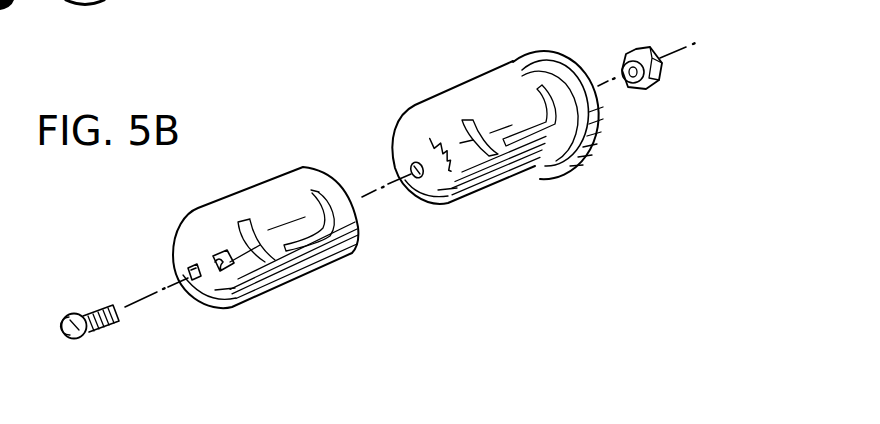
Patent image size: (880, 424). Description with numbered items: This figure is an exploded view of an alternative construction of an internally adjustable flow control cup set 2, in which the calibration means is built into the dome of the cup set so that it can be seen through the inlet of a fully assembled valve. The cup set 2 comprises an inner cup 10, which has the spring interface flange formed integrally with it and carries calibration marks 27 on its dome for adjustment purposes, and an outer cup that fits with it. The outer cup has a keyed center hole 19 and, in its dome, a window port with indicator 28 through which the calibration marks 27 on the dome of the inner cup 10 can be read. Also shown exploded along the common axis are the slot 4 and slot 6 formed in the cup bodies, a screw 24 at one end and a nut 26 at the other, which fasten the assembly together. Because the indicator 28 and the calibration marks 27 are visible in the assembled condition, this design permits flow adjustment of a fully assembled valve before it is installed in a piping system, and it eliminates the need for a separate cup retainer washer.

The internally adjustable cup set 2 is at (348, 252).
The curved slot 4 is at (325, 226).
The slot 6 is at (258, 236).
The inner cup 10 is at (474, 90).
The keyed center hole 19 is at (189, 271).
The screw 24 is at (78, 337).
The nut 26 is at (637, 65).
The calibration marks 27 is at (428, 138).
The window port with indicator 28 is at (214, 256).